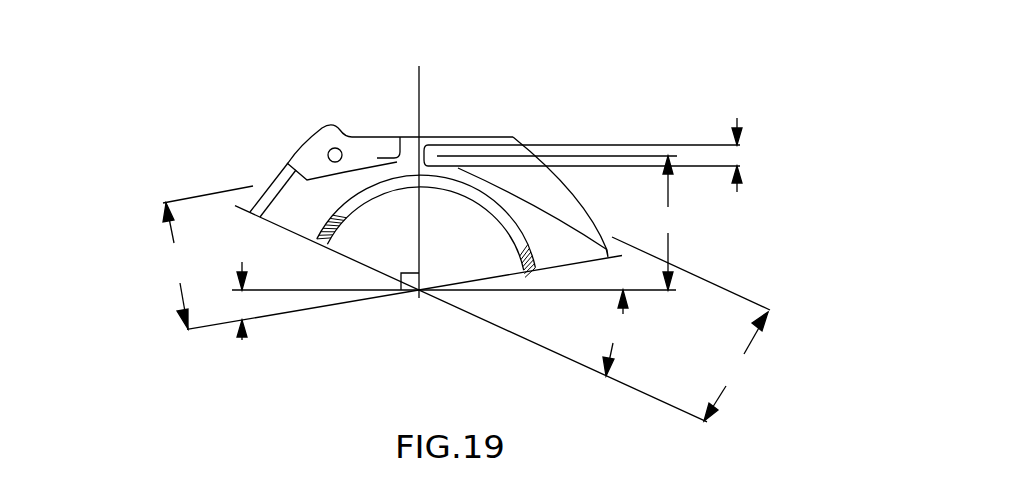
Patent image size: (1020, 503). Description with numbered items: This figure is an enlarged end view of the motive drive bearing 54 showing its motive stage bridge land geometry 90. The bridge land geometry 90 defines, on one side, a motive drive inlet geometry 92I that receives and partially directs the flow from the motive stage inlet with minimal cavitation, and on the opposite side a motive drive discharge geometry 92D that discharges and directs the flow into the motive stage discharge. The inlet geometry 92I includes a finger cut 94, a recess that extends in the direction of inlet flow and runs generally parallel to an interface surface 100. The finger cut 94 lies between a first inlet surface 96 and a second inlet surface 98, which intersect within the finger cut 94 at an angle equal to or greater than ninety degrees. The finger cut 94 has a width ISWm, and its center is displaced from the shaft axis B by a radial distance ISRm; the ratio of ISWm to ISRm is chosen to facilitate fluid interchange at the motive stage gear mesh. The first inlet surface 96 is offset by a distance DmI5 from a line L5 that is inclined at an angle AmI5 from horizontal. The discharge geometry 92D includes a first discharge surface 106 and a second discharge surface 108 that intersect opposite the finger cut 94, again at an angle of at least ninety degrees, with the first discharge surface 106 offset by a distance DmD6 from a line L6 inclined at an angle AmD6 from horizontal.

The motive drive bearing 54 is at (562, 58).
The motive stage bridge land geometry 90 is at (446, 92).
The motive drive discharge geometry 92D is at (128, 177).
The motive drive inlet geometry 92I is at (762, 202).
The finger cut 94 is at (426, 160).
The first inlet surface 96 is at (552, 203).
The second inlet surface 98 is at (443, 145).
The interface surface 100 is at (322, 128).
The first discharge surface 106 is at (287, 163).
The second discharge surface 108 is at (377, 158).
The coupling shaft axis B is at (419, 292).
The line L5 is at (653, 397).
The line L6 is at (212, 325).
The first discharge surface displacement distance DmD6 is at (196, 257).
The first inlet surface displacement distance DmI5 is at (691, 329).
The discharge line angle AmD6 is at (245, 342).
The inlet line angle AmI5 is at (611, 333).
The finger cut radial distance ISRm is at (675, 223).
The finger cut width ISWm is at (743, 154).